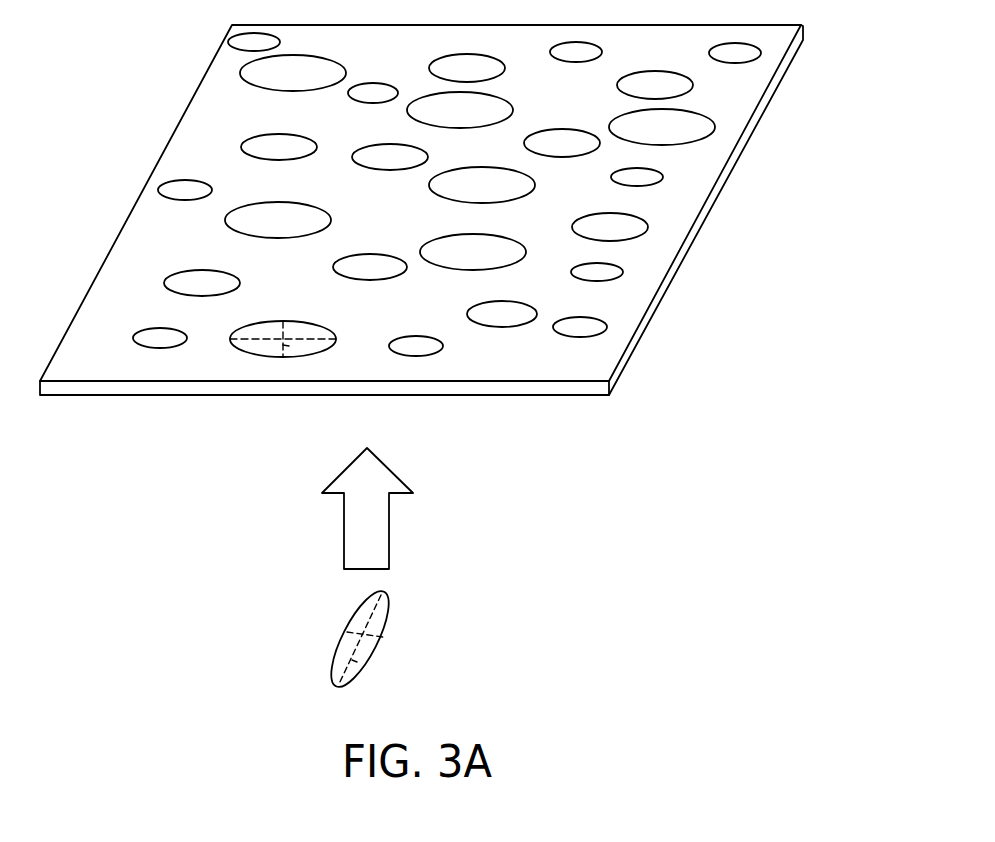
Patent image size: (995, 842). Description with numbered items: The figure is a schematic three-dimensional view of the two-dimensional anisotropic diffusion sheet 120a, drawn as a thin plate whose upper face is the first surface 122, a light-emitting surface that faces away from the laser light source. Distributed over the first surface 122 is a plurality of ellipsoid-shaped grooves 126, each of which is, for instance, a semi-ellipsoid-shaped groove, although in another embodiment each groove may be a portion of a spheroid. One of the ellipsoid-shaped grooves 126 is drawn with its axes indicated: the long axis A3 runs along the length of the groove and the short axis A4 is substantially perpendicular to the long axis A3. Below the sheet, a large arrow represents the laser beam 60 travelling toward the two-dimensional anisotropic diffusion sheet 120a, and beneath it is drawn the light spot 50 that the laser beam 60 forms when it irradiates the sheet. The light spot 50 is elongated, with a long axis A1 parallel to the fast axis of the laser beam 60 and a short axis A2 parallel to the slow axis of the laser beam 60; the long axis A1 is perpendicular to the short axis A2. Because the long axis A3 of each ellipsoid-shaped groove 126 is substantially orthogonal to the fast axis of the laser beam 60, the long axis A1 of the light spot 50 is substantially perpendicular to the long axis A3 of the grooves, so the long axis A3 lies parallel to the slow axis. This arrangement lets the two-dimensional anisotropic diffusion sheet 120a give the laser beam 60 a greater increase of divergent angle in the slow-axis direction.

The two-dimensional anisotropic diffusion sheet 120a is at (421, 250).
The first surface 122 is at (143, 248).
The ellipsoid-shaped groove 126 is at (185, 188).
The long axis of the ellipsoid-shaped groove A3 is at (258, 343).
The short axis of the ellipsoid-shaped groove A4 is at (298, 347).
The laser beam 60 is at (344, 531).
The light spot 50 is at (343, 643).
The short axis of the light spot A2 is at (385, 637).
The long axis of the light spot A1 is at (366, 664).